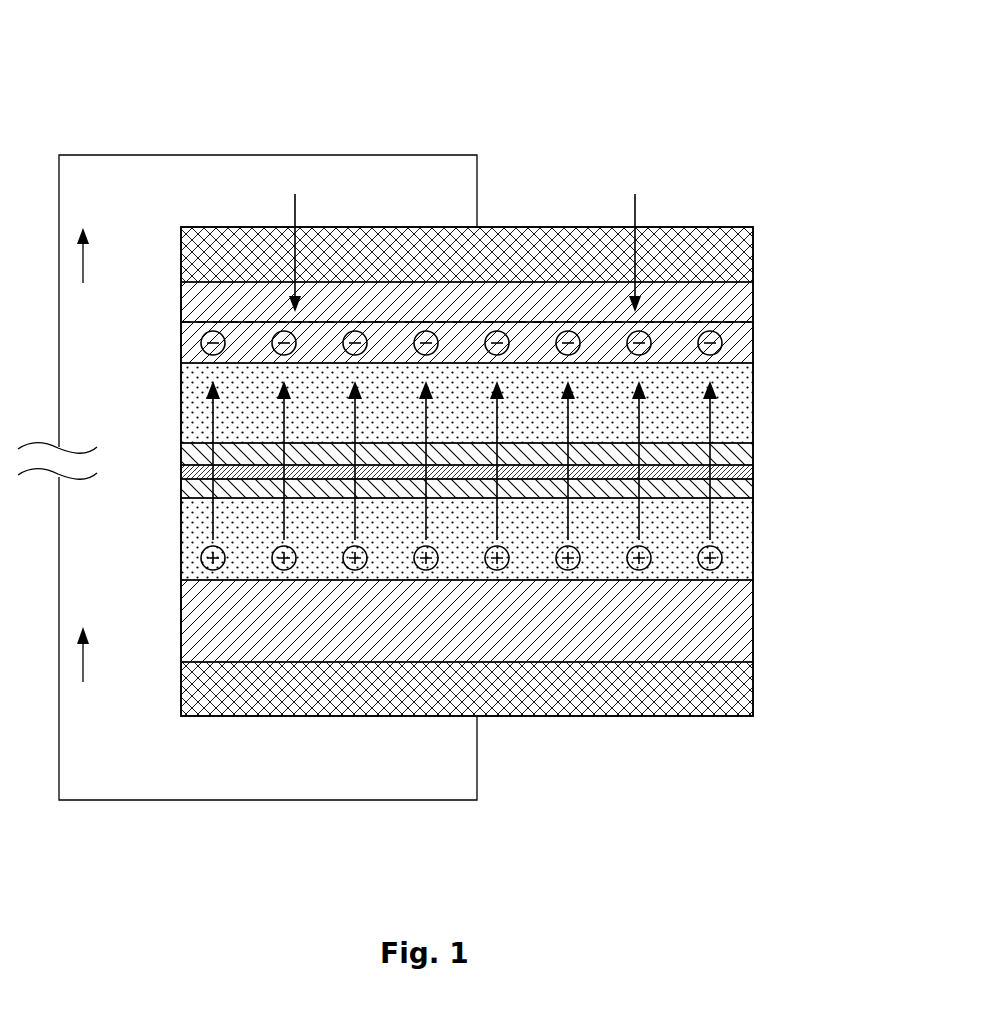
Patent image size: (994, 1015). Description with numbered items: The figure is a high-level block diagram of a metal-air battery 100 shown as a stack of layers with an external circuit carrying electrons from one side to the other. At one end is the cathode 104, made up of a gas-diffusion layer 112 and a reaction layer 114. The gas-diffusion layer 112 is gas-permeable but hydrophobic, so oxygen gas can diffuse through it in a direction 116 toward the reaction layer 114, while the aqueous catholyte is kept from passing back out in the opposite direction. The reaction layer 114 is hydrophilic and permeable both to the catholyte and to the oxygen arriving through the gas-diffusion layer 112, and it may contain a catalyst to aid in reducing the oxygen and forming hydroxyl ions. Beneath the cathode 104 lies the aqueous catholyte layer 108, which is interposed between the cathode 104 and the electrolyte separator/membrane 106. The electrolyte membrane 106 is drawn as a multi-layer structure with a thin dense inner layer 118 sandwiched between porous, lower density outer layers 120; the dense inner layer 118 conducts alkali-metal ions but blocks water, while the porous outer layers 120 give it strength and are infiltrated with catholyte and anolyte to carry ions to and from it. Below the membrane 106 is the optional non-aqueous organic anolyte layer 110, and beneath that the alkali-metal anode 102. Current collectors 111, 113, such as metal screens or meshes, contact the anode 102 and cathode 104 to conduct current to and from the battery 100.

The metal-air battery 100 is at (283, 72).
The anode 102 is at (740, 622).
The cathode 104 is at (513, 322).
The electrolyte separator/membrane 106 is at (525, 481).
The aqueous catholyte layer 108 is at (740, 401).
The non-aqueous organic anolyte layer 110 is at (740, 553).
The current collector 111 is at (740, 251).
The gas-diffusion layer 112 is at (745, 303).
The current collector 113 is at (740, 688).
The reaction layer 114 is at (745, 343).
The direction 116 is at (637, 216).
The dense inner layer 118 is at (745, 484).
The porous outer layers 120 is at (745, 454).